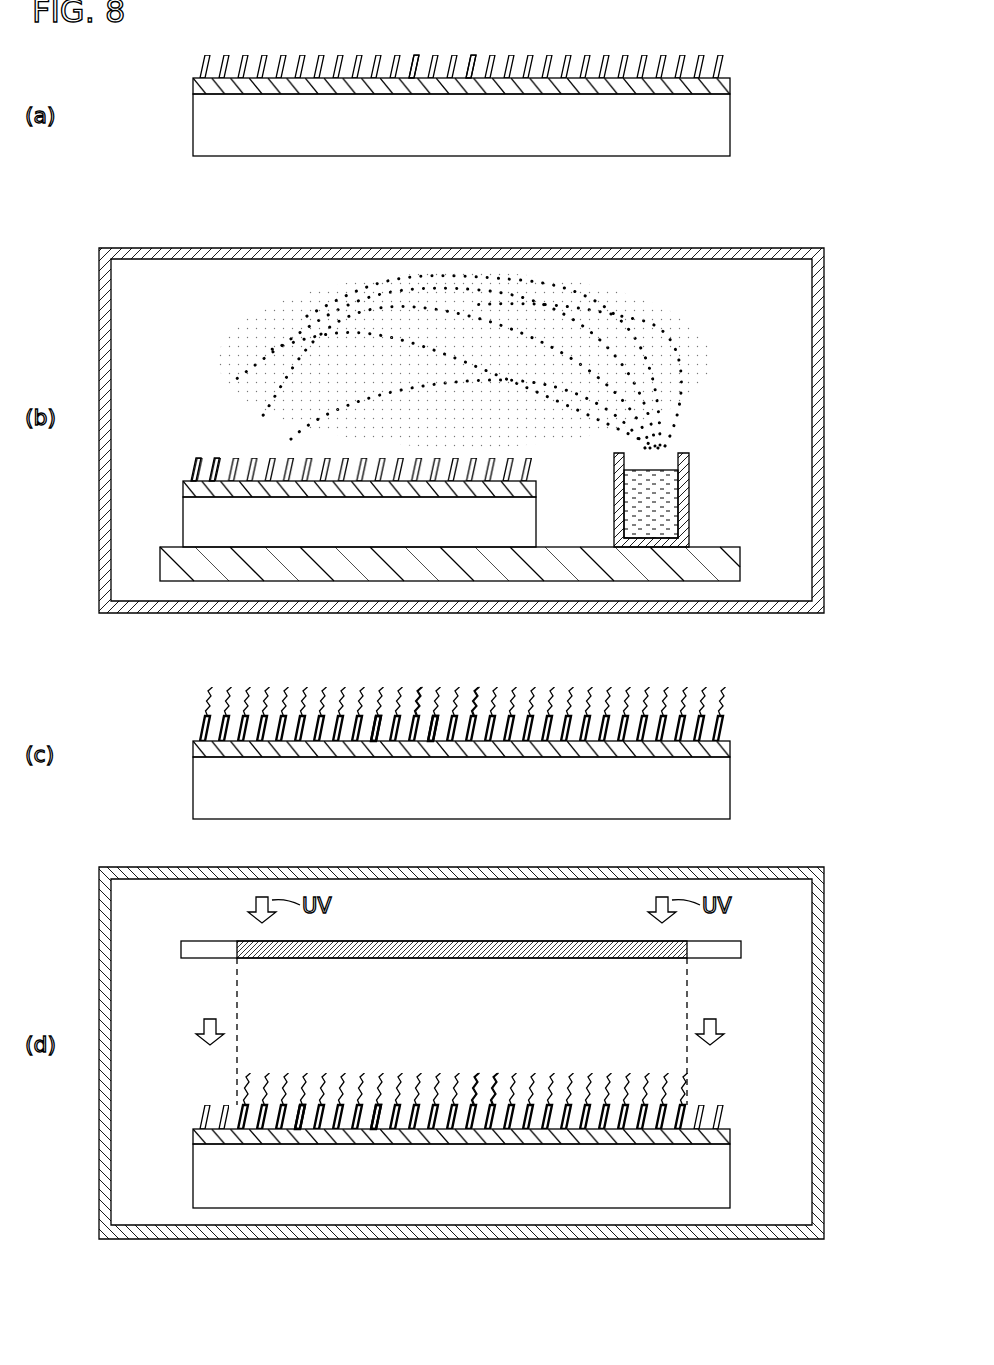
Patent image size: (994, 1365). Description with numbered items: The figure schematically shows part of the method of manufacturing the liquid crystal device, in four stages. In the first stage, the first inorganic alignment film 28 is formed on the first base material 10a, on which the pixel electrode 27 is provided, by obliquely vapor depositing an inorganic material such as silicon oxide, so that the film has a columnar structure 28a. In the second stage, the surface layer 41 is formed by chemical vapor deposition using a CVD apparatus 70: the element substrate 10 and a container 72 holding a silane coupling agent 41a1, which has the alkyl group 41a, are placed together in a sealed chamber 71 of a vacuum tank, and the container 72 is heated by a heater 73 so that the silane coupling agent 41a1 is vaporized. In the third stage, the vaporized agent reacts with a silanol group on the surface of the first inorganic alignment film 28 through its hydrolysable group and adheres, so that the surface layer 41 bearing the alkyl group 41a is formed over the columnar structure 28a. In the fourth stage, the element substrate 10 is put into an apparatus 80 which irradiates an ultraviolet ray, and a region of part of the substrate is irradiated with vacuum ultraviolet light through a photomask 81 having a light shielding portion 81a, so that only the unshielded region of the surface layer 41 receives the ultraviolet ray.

The element substrate 10 is at (468, 608).
The first base material 10a is at (725, 122).
The pixel electrode 27 is at (731, 80).
The first inorganic alignment film 28 is at (474, 603).
The columnar structure 28a is at (403, 57).
The surface layer 41 is at (435, 884).
The alkyl group 41a is at (383, 690).
The silane coupling agent 41a1 is at (667, 517).
The CVD apparatus 70 is at (767, 228).
The sealed chamber 71 is at (700, 247).
The container 72 is at (693, 500).
The heater 73 is at (730, 563).
The apparatus which irradiates an ultraviolet ray 80 is at (785, 867).
The photomask 81 is at (490, 929).
The light shielding portion 81a is at (470, 941).